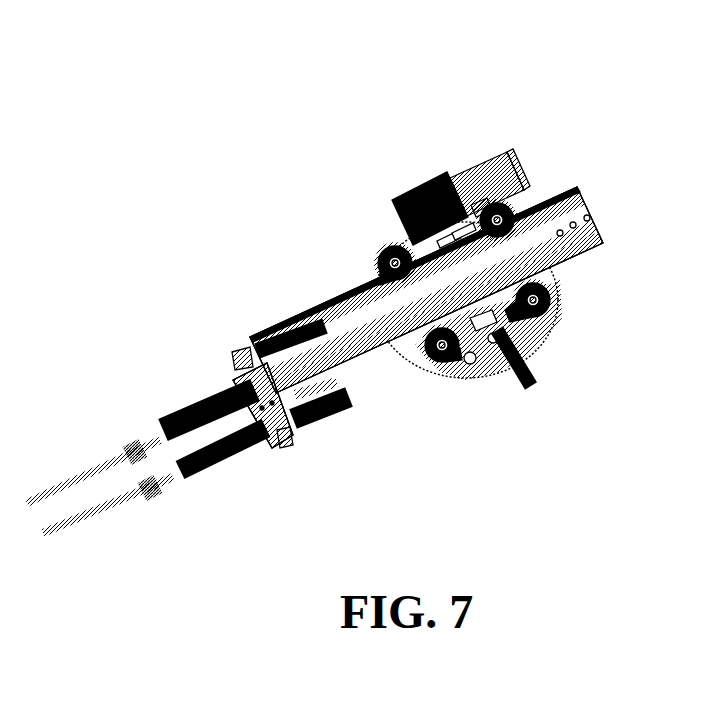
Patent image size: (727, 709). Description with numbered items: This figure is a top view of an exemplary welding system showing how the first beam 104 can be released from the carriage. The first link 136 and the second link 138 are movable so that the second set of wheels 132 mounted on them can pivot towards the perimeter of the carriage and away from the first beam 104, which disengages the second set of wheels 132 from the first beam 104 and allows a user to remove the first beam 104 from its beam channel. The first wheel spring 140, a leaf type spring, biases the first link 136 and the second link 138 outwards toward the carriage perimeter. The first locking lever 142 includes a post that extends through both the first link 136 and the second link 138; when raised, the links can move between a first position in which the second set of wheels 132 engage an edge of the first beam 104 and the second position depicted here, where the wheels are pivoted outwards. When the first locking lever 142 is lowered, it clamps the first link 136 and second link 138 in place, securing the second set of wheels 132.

The first beam 104 is at (532, 243).
The second set of wheels 132 is at (433, 378).
The first link 136 is at (468, 338).
The second link 138 is at (500, 313).
The first wheel spring 140 is at (500, 313).
The first locking lever 142 is at (530, 382).